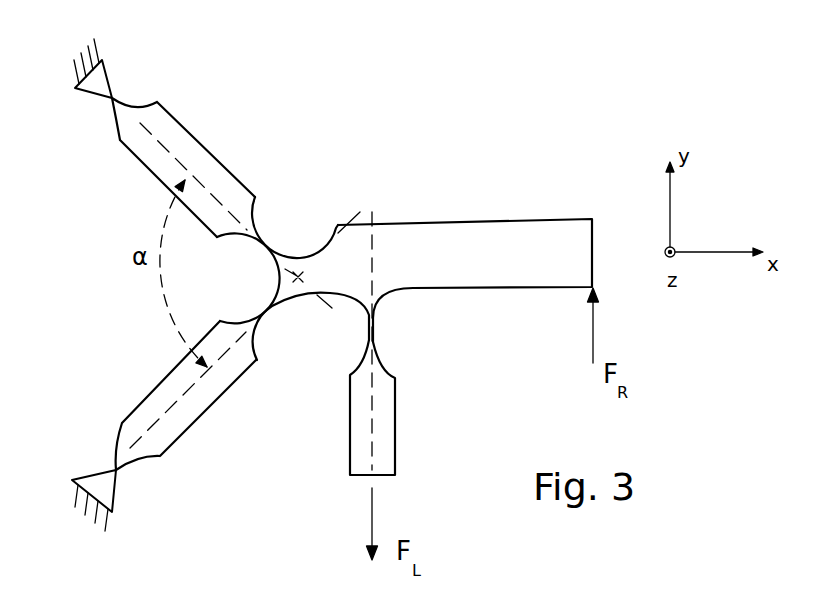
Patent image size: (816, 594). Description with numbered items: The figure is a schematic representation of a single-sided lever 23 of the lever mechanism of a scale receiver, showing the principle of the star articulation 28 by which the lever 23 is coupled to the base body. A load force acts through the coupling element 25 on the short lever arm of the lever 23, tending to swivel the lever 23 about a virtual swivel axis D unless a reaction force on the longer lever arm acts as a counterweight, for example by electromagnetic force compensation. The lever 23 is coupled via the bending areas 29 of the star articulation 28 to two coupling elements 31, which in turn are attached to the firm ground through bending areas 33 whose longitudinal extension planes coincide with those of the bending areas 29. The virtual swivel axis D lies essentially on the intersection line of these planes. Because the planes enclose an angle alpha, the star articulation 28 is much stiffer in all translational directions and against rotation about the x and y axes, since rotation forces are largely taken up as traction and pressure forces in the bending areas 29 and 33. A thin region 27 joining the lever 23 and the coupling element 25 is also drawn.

The lever 23 is at (517, 227).
The coupling element 25 is at (392, 413).
The flexure hinge 27 is at (378, 333).
The star articulation 28 is at (300, 171).
The bending areas 29 is at (263, 247).
The coupling elements 31 is at (177, 122).
The bending areas 33 is at (116, 94).